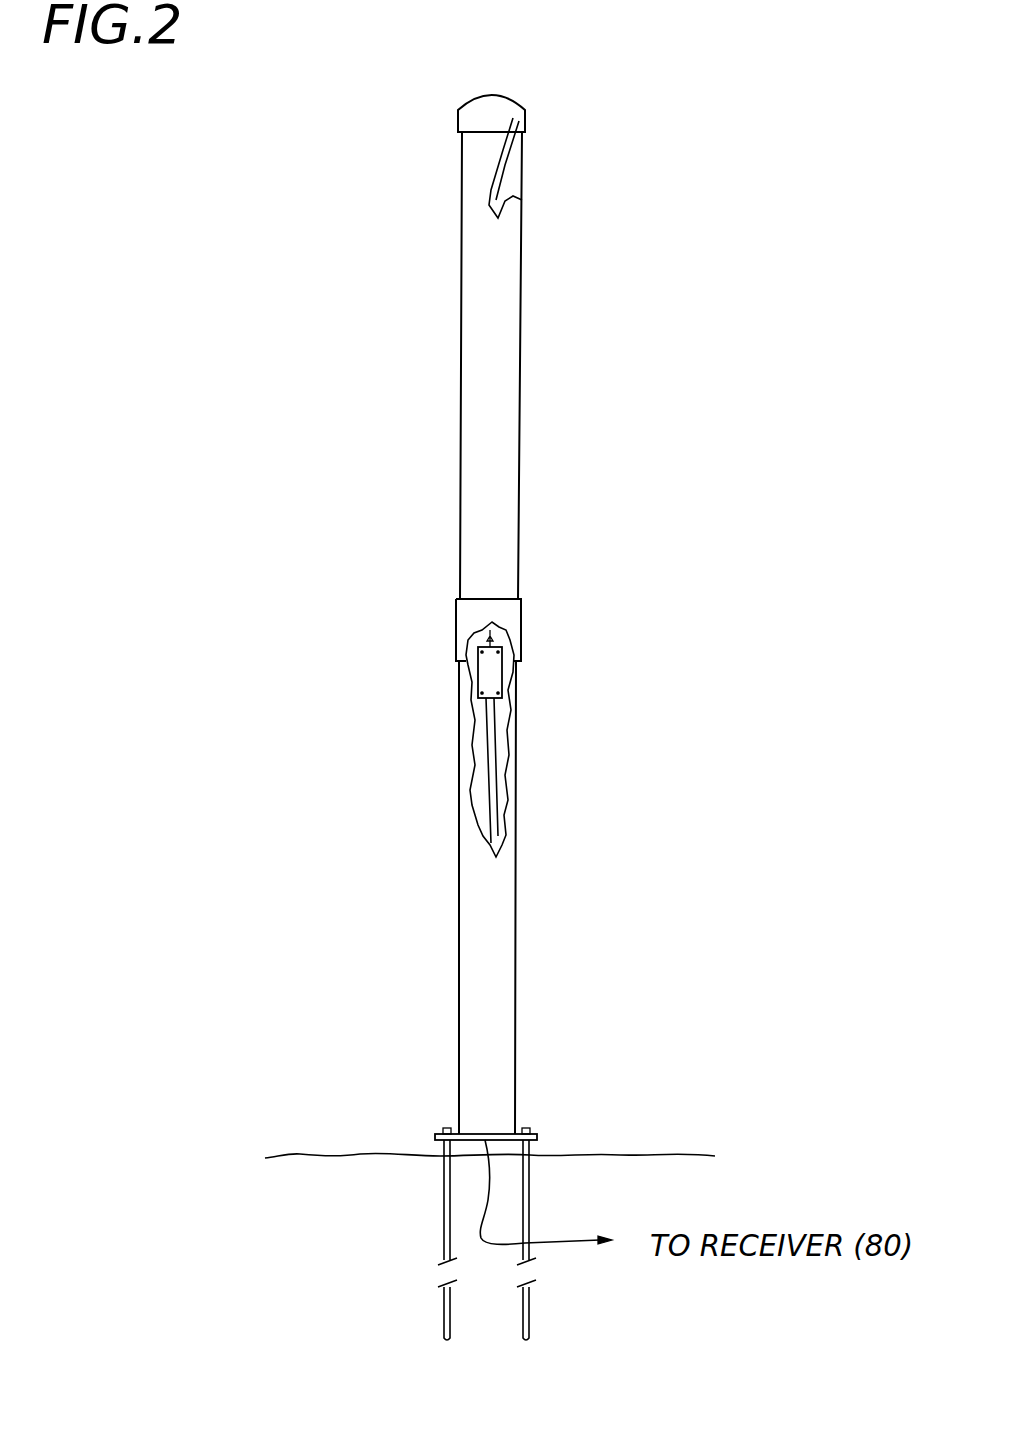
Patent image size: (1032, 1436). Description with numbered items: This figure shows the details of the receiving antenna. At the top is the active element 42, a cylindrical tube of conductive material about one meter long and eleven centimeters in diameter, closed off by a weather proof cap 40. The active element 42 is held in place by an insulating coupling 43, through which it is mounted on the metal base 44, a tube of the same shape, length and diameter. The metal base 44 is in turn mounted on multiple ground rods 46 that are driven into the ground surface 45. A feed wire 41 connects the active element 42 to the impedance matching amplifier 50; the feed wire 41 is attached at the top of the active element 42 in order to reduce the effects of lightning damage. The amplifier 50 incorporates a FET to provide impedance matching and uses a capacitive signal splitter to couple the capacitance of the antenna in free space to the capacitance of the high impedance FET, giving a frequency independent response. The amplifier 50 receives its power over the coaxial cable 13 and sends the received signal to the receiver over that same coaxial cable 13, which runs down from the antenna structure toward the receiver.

The weather proof cap 40 is at (468, 102).
The feed wire 41 is at (522, 187).
The active element 42 is at (470, 427).
The insulating coupling 43 is at (522, 612).
The coaxial cable 13 is at (495, 753).
The impedance matching amplifier 50 is at (475, 670).
The metal base 44 is at (458, 933).
The ground surface 45 is at (349, 1153).
The ground rods 46 is at (443, 1228).